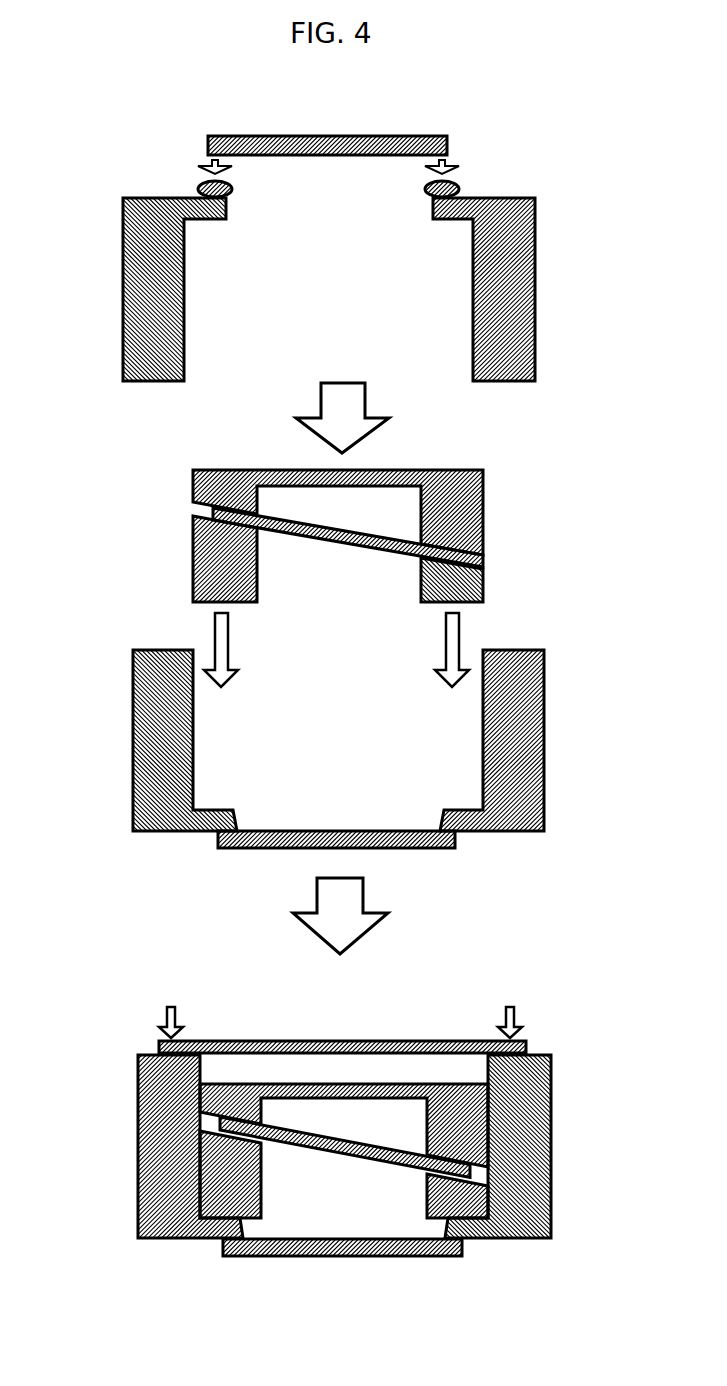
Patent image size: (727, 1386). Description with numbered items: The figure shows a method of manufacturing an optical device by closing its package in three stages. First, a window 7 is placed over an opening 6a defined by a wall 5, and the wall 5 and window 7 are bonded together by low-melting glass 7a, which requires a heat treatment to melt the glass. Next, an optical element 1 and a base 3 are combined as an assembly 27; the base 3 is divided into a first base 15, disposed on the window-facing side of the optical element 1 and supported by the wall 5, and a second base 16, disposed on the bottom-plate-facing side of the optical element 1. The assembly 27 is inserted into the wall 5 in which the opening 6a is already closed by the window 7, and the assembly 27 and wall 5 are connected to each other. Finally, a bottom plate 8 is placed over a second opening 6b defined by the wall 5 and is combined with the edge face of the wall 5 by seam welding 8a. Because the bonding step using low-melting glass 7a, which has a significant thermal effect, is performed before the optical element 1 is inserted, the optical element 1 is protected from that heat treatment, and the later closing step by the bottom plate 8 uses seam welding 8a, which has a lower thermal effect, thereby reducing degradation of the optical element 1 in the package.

The optical element 1 is at (375, 533).
The base 3 is at (404, 844).
The wall 5 is at (497, 293).
The opening 6a is at (368, 228).
The opening 6b is at (308, 660).
The window 7 is at (232, 147).
The low-melting glass 7a is at (203, 183).
The bottom plate 8 is at (338, 1046).
The seam welding 8a is at (173, 1007).
The first base 15 is at (467, 583).
The second base 16 is at (468, 528).
The assembly 27 is at (422, 844).